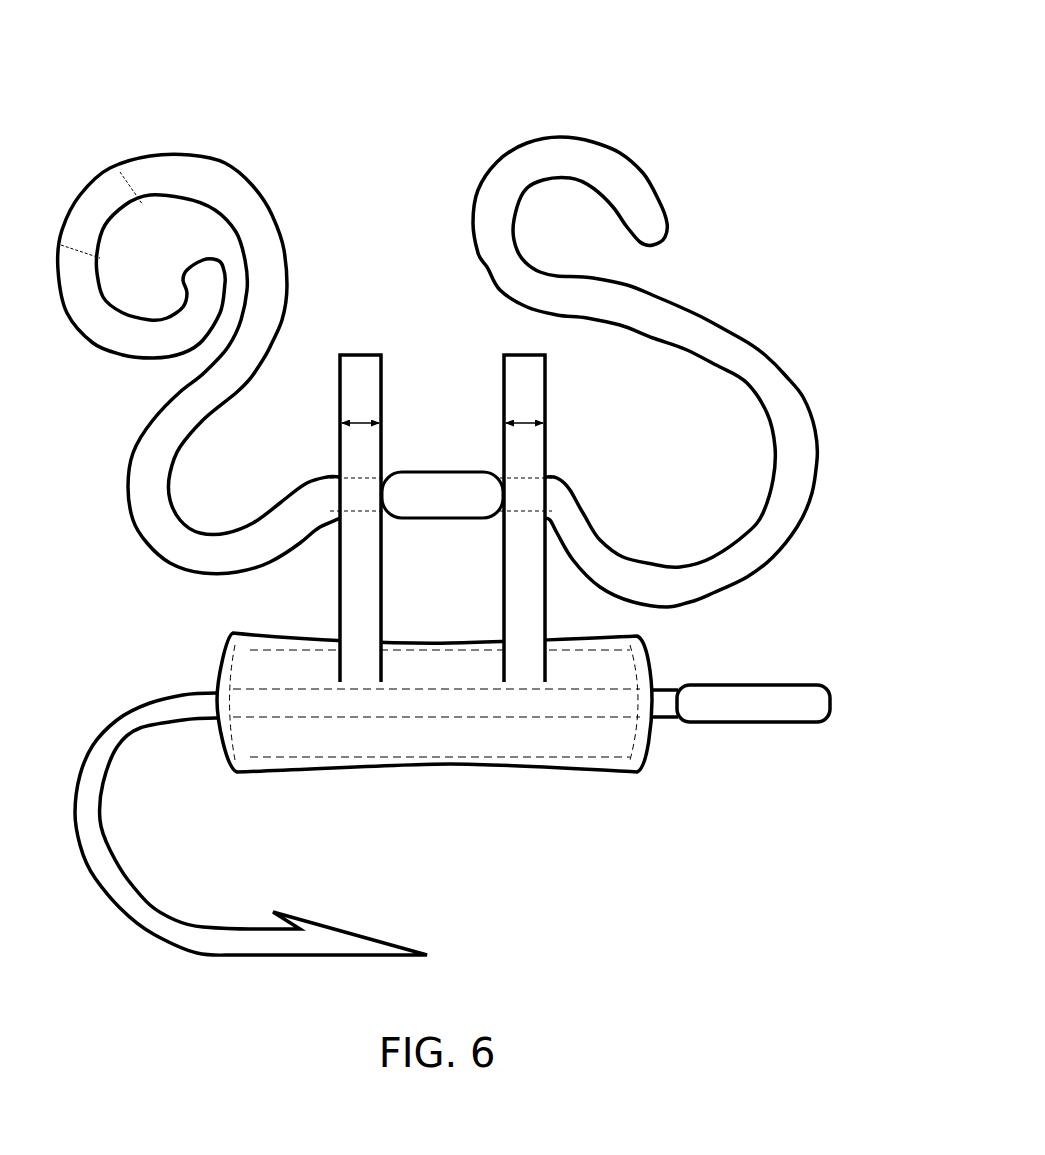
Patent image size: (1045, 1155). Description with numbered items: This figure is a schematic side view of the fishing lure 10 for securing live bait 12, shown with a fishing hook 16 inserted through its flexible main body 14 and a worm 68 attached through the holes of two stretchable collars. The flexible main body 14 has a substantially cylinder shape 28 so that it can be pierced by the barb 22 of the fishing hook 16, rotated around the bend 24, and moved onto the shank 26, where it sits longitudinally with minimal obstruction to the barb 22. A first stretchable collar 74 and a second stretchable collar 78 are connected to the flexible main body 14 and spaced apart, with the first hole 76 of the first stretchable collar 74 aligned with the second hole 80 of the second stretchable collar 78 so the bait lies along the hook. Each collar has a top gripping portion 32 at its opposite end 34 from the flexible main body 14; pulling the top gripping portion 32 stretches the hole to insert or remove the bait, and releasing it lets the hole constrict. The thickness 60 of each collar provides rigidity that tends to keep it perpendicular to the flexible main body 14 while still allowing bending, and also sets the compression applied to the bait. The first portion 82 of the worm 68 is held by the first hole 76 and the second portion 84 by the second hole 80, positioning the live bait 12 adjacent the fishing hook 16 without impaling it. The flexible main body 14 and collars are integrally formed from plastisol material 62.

The fishing lure 10 is at (622, 76).
The live bait 12 is at (645, 372).
The worm 68 is at (645, 372).
The flexible main body 14 is at (434, 740).
The fishing hook 16 is at (765, 692).
The barb 22 is at (345, 905).
The bend 24 is at (253, 824).
The shank 26 is at (385, 779).
The substantially cylinder shape 28 is at (210, 622).
The top gripping portion 32 is at (407, 360).
The opposite end 34 is at (387, 630).
The thickness 60 is at (358, 424).
The plastisol material 62 is at (475, 553).
The first stretchable collar 74 is at (512, 353).
The first hole 76 is at (528, 479).
The second stretchable collar 78 is at (355, 353).
The second hole 80 is at (235, 388).
The first portion 82 is at (645, 372).
The second portion 84 is at (235, 388).